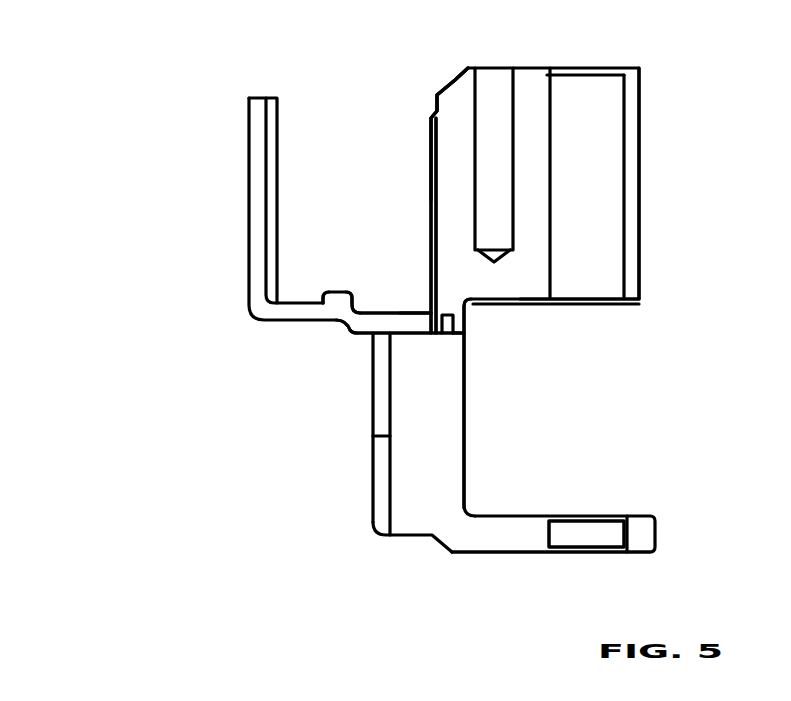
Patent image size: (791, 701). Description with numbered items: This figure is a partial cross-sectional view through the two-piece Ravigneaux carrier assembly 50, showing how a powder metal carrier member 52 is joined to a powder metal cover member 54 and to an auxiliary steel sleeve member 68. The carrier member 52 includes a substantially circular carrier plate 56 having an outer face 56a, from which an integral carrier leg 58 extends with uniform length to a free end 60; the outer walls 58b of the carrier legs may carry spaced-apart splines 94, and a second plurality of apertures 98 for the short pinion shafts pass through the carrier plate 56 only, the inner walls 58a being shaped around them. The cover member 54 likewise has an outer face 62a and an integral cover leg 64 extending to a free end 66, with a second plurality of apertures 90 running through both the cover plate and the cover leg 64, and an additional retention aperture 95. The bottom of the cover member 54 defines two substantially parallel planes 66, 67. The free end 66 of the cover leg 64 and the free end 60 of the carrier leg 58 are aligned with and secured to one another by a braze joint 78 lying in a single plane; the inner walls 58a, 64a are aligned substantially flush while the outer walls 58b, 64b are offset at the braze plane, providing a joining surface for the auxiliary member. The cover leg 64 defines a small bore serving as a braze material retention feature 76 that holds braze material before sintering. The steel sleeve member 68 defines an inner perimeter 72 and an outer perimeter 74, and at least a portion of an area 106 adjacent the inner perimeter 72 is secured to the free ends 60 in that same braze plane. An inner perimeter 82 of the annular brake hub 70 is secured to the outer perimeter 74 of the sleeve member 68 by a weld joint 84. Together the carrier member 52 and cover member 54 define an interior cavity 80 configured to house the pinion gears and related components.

The carrier assembly 50 is at (124, 160).
The carrier member 52 is at (486, 471).
The cover member 54 is at (513, 264).
The carrier plate 56 is at (487, 538).
The outer face 56a is at (518, 554).
The carrier leg 58 is at (380, 528).
The inner wall 58a is at (466, 472).
The outer wall 58b is at (373, 436).
The free end 60 is at (400, 335).
The outer face 62a is at (523, 70).
The cover leg 64 is at (445, 262).
The inner wall 64a is at (467, 320).
The outer wall 64b is at (431, 185).
The free end 66 is at (467, 322).
The plane 67 is at (530, 302).
The steel sleeve member 68 is at (347, 329).
The brake hub 70 is at (231, 182).
The inner perimeter 72 is at (427, 323).
The outer perimeter 74 is at (350, 299).
The braze material retention feature 76 is at (450, 335).
The braze joint 78 is at (472, 333).
The interior cavity 80 is at (630, 382).
The inner perimeter 82 is at (326, 299).
The weld joint 84 is at (340, 288).
The second plurality of apertures 90 is at (615, 72).
The splines 94 is at (373, 488).
The aperture 95 is at (483, 70).
The second plurality of apertures 98 is at (620, 520).
The area 106 is at (395, 325).